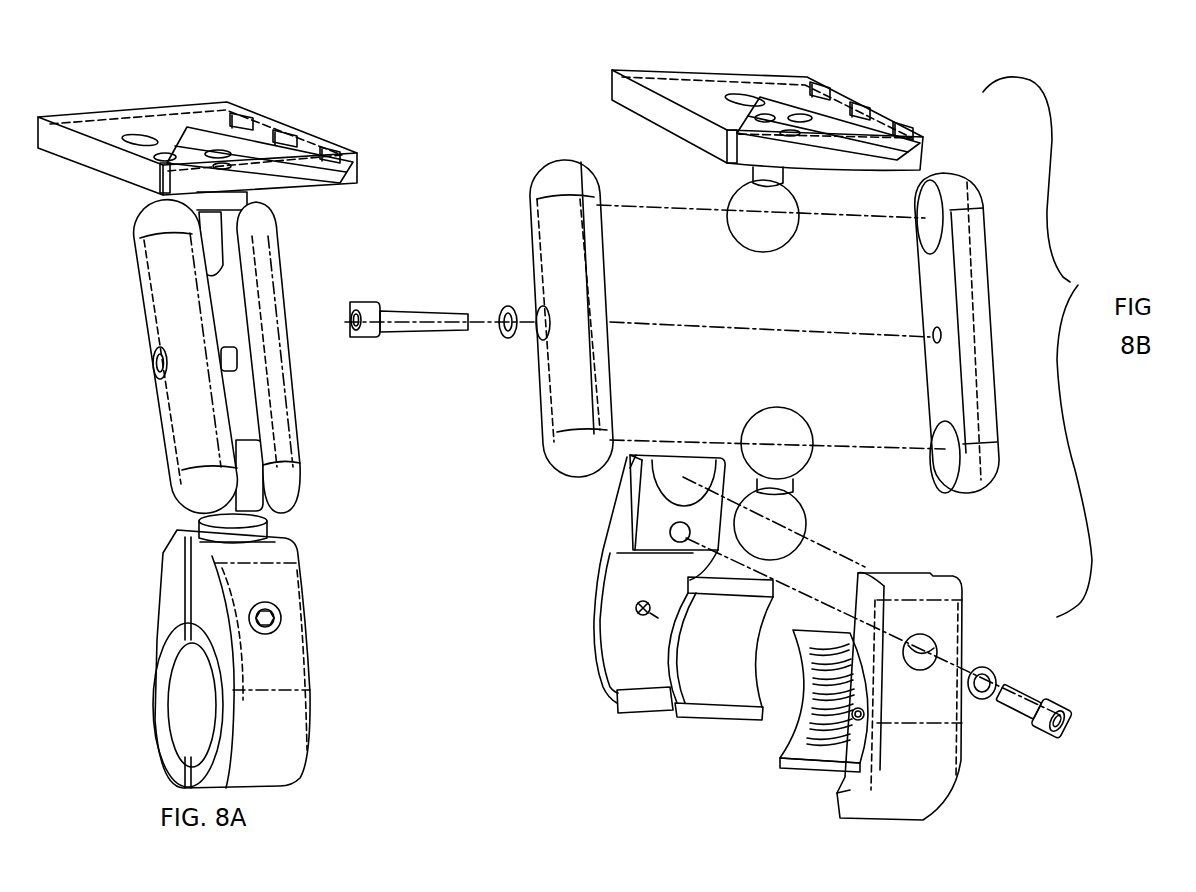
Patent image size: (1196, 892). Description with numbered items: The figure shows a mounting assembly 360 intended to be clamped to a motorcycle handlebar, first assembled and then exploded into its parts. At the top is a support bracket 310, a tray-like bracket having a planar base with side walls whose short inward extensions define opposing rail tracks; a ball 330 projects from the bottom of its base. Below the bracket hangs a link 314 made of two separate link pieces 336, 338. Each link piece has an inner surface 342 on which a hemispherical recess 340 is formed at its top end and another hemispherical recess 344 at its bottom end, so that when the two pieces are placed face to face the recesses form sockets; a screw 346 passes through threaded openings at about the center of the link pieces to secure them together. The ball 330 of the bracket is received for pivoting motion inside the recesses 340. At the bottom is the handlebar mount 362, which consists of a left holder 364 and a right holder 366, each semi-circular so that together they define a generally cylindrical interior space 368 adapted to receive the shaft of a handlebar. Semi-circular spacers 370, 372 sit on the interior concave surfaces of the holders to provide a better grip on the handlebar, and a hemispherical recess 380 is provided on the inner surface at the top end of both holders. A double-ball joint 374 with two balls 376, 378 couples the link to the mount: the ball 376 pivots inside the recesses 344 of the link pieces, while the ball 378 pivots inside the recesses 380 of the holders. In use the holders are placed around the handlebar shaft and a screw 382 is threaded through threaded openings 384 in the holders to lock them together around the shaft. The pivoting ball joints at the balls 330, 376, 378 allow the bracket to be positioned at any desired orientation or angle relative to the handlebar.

In FIG. 8A, the support bracket 310 is at (175, 91).
In FIG. 8B, the support bracket 310 is at (820, 68).
In FIG. 8A, the link 314 is at (283, 272).
In FIG. 8B, the ball 330 is at (767, 233).
In FIG. 8B, the link piece 336 is at (527, 237).
In FIG. 8B, the link piece 338 is at (947, 333).
In FIG. 8B, the hemispherical recess 340 is at (930, 200).
In FIG. 8B, the inner surface 342 is at (926, 290).
In FIG. 8B, the hemispherical recess 344 is at (947, 467).
In FIG. 8B, the screw 346 is at (415, 325).
In FIG. 8B, the mounting assembly 360 is at (1061, 347).
In FIG. 8A, the handlebar mount 362 is at (183, 642).
In FIG. 8B, the left holder 364 is at (607, 544).
In FIG. 8B, the right holder 366 is at (940, 763).
In FIG. 8A, the cylindrical interior space 368 is at (190, 702).
In FIG. 8B, the semi-circular spacer 370 is at (688, 720).
In FIG. 8B, the semi-circular spacer 372 is at (790, 760).
In FIG. 8B, the double-ball joint 374 is at (826, 469).
In FIG. 8B, the ball 376 is at (797, 433).
In FIG. 8B, the ball 378 is at (785, 531).
In FIG. 8B, the hemispherical recess 380 is at (677, 473).
In FIG. 8B, the screw 382 is at (1020, 697).
In FIG. 8B, the threaded openings 384 is at (670, 530).